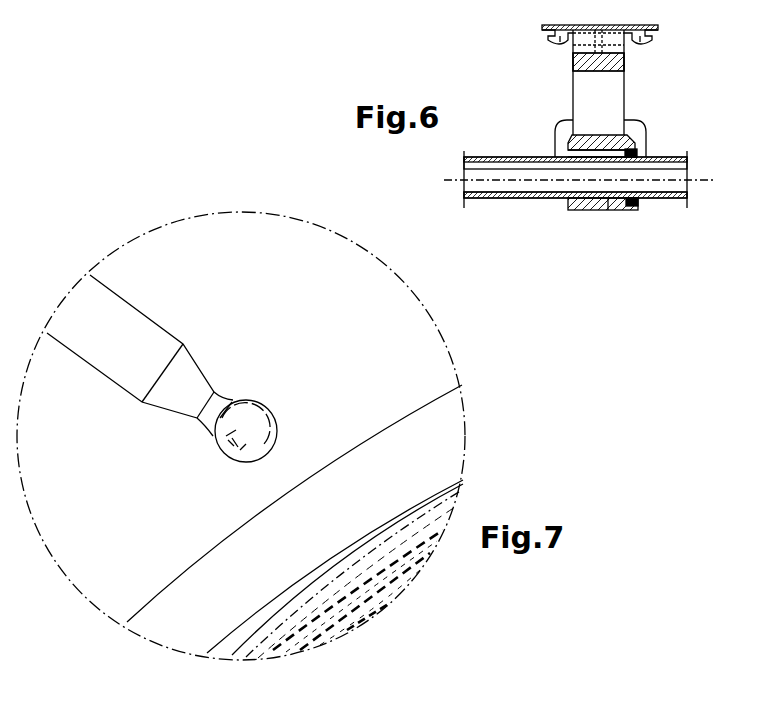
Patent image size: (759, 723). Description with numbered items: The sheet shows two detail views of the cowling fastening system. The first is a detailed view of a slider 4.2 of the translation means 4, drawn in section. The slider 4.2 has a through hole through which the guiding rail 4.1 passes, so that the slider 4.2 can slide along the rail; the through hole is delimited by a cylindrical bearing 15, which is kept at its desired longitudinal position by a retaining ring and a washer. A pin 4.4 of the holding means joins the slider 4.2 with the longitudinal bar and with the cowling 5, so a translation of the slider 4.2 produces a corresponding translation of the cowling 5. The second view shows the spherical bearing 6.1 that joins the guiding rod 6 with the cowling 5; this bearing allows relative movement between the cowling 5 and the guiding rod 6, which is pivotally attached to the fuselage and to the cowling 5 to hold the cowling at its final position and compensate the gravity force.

In FIG. 6, the translation means 4 is at (504, 76).
In FIG. 6, the guiding rail 4.1 is at (523, 169).
In FIG. 6, the slider 4.2 is at (610, 140).
In FIG. 6, the pin 4.4 is at (626, 87).
In FIG. 6, the cylindrical bearing 15 is at (609, 211).
In FIG. 7, the cowling 5 is at (422, 363).
In FIG. 7, the guiding rod 6 is at (128, 340).
In FIG. 7, the spherical bearing 6.1 is at (248, 430).